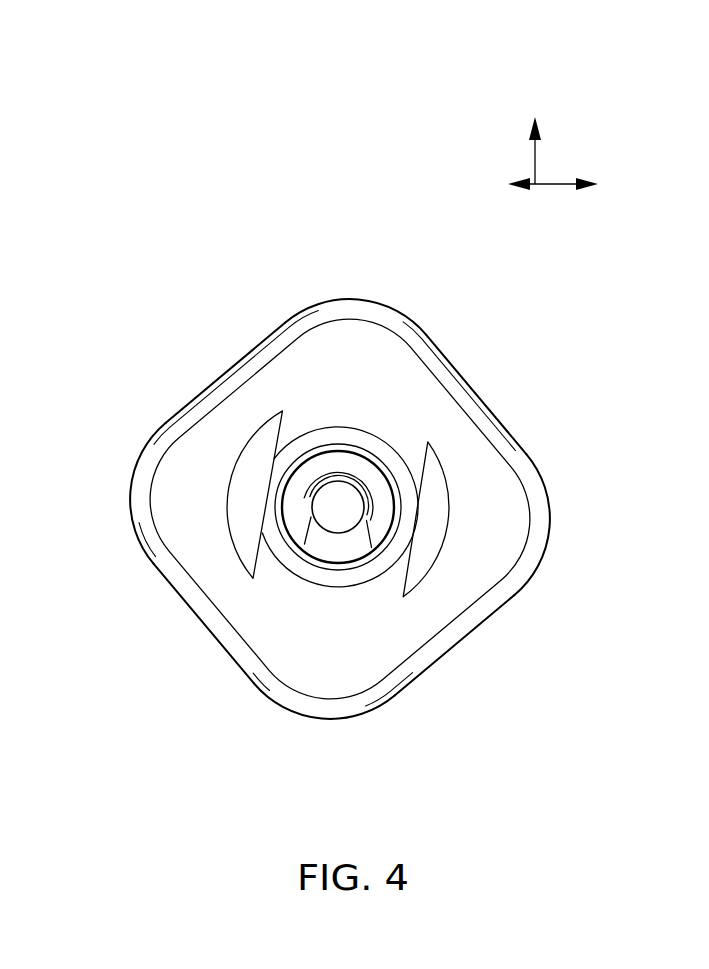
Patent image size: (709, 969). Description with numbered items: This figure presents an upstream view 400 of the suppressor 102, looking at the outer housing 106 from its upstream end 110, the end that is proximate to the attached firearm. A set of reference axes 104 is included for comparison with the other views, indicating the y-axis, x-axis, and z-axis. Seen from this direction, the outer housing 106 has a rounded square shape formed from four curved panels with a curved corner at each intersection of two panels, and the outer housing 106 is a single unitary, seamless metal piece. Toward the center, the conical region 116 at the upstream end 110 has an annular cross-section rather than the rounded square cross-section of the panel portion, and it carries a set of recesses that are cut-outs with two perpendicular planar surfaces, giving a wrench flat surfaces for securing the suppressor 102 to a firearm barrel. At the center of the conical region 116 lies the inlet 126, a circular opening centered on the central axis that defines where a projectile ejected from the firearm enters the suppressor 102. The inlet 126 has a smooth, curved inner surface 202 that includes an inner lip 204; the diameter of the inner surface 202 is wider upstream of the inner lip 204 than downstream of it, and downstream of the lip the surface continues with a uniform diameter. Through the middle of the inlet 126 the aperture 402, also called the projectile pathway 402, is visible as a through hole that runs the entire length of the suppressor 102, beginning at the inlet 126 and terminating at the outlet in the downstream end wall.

The upstream view 400 is at (125, 125).
The suppressor 102 is at (213, 172).
The set of reference axes 104 is at (600, 141).
The outer housing 106 is at (228, 262).
The upstream end 110 is at (127, 360).
The conical region 116 is at (188, 552).
The inlet 126 is at (293, 549).
The inner surface 202 is at (357, 533).
The inner lip 204 is at (348, 460).
The aperture 402 is at (343, 505).